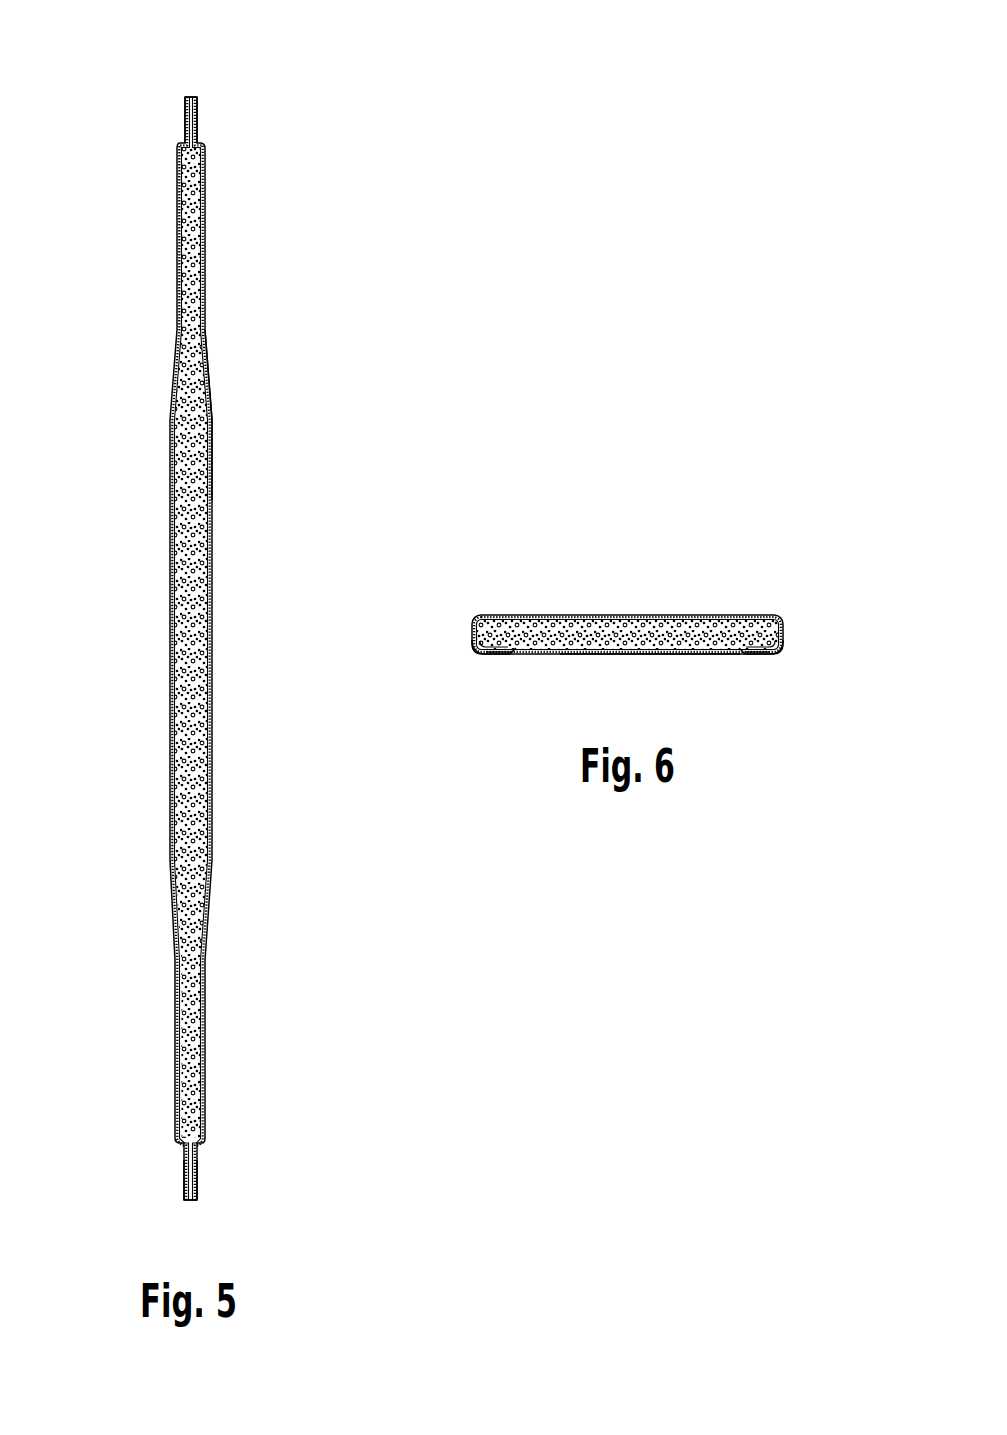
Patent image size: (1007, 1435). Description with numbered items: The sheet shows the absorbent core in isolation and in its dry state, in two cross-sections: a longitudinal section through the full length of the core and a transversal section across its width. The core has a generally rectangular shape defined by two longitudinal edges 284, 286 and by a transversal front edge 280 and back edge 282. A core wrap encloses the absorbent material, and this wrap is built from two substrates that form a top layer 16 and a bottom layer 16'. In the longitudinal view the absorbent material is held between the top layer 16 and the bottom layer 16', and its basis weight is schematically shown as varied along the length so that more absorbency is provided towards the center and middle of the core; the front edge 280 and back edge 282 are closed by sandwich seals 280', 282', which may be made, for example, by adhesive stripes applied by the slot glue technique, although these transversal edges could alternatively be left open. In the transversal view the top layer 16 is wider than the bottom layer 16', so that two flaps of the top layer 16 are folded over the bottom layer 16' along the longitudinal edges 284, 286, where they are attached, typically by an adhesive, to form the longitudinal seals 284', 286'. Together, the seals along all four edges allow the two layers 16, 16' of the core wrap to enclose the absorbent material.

In FIG. 5, the top layer 16 is at (146, 648).
In FIG. 6, the top layer 16 is at (627, 595).
In FIG. 5, the bottom layer 16' is at (255, 416).
In FIG. 6, the bottom layer 16' is at (650, 692).
In FIG. 5, the front edge 280 is at (113, 1207).
In FIG. 5, the sandwich seal 280' is at (253, 1179).
In FIG. 5, the back edge 282 is at (203, 74).
In FIG. 5, the sandwich seal 282' is at (252, 111).
In FIG. 6, the longitudinal edge 284 is at (450, 703).
In FIG. 6, the longitudinal seal 284' is at (525, 693).
In FIG. 6, the longitudinal edge 286 is at (803, 578).
In FIG. 6, the longitudinal seal 286' is at (787, 691).